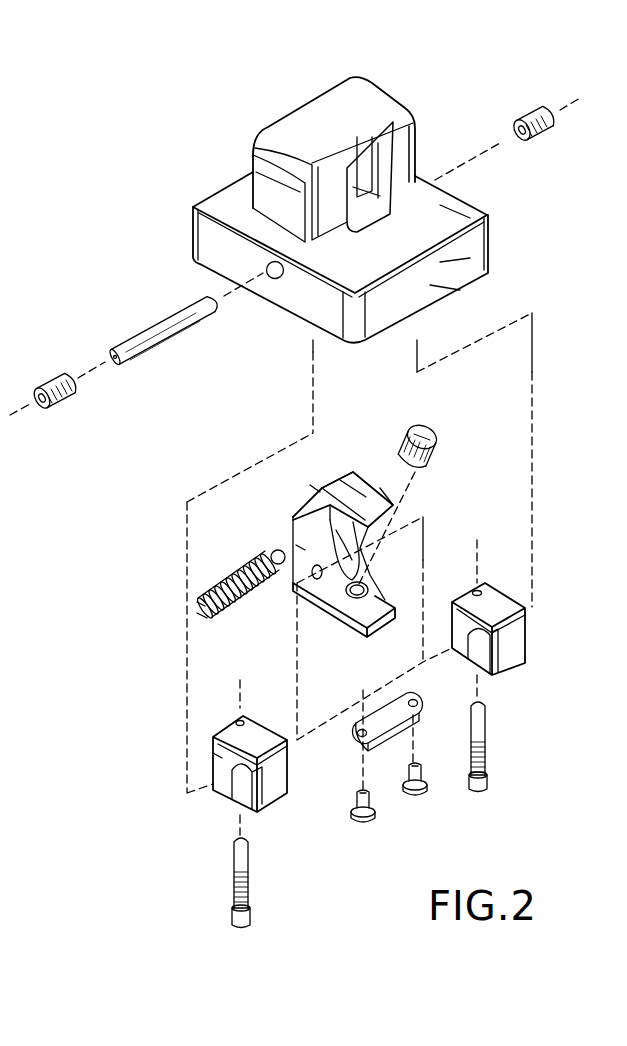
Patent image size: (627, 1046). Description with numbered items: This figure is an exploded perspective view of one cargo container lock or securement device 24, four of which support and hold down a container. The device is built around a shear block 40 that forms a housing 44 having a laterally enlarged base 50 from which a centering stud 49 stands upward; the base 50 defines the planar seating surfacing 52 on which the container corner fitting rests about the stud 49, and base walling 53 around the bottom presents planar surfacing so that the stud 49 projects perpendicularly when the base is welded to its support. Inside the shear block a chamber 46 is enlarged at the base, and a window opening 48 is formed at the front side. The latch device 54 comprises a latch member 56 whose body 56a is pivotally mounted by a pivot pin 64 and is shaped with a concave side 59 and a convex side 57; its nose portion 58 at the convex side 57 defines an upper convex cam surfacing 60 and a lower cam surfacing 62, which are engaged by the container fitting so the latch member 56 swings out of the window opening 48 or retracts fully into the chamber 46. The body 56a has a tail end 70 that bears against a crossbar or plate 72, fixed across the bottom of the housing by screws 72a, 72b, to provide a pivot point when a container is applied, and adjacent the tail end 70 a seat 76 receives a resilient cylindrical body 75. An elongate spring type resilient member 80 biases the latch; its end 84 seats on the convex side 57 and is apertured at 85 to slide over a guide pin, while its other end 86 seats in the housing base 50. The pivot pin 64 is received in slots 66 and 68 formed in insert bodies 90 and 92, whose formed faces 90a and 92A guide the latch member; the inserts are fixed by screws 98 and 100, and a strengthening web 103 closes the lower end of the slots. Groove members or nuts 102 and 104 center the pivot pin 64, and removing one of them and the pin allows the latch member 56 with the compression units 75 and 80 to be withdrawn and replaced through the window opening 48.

The container lock or securement device 24 is at (131, 826).
The shear block 40 is at (203, 154).
The housing 44 is at (298, 302).
The chamber 46 is at (366, 210).
The window opening 48 is at (377, 148).
The centering stud 49 is at (267, 187).
The enlarged base 50 is at (467, 258).
The surfacing 52 is at (457, 213).
The base walling 53 is at (437, 278).
The latch device 54 is at (360, 443).
The latch member 56 is at (300, 507).
The body 56a is at (305, 555).
The convex side 57 is at (398, 460).
The nose portion 58 is at (368, 495).
The concave side 59 is at (347, 572).
The upper convex cam surfacing 60 is at (350, 480).
The lower cam surfacing 62 is at (324, 580).
The pivot pin 64 is at (150, 330).
The slot 66 is at (271, 278).
The slot 68 is at (473, 647).
The tail end 70 is at (387, 597).
The crossbar or plate 72 is at (387, 740).
The screw 72a is at (362, 820).
The screw 72b is at (425, 788).
The resilient cylindrical body 75 is at (446, 436).
The seat 76 is at (360, 590).
The resilient member 80 is at (210, 562).
The end of resilient member 84 is at (200, 602).
The aperture 85 is at (277, 550).
The other end of resilient member 86 is at (197, 612).
The insert body 90 is at (273, 788).
The formed face 90a is at (213, 753).
The insert body 92 is at (513, 653).
The formed face 92A is at (512, 600).
The screw 98 is at (242, 892).
The screw 100 is at (487, 740).
The groove member or nut 102 is at (58, 410).
The strengthening web 103 is at (233, 793).
The groove member or nut 104 is at (535, 107).